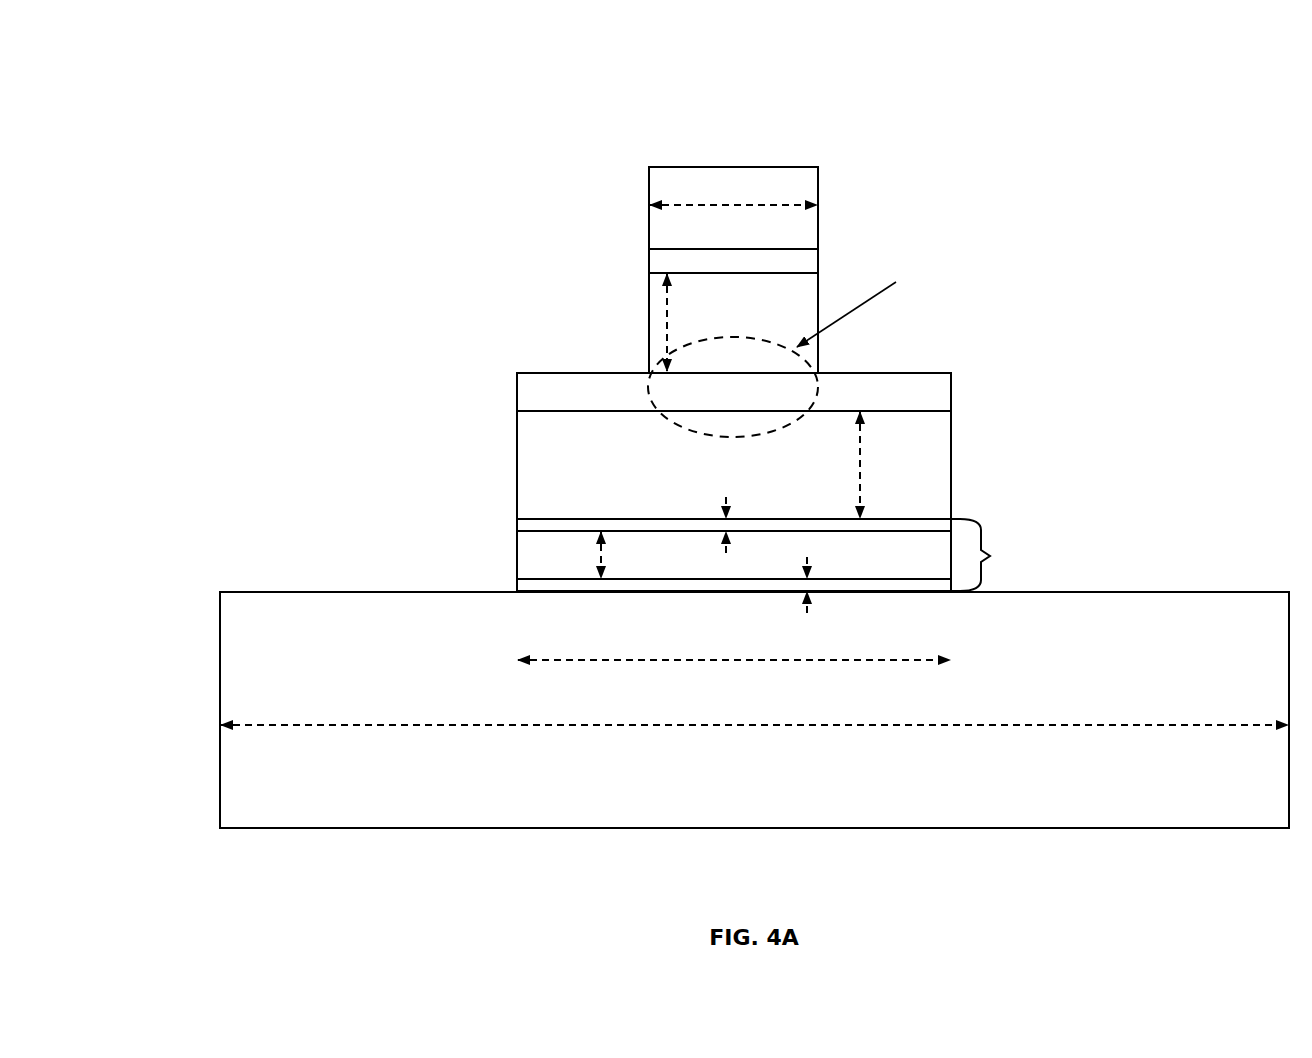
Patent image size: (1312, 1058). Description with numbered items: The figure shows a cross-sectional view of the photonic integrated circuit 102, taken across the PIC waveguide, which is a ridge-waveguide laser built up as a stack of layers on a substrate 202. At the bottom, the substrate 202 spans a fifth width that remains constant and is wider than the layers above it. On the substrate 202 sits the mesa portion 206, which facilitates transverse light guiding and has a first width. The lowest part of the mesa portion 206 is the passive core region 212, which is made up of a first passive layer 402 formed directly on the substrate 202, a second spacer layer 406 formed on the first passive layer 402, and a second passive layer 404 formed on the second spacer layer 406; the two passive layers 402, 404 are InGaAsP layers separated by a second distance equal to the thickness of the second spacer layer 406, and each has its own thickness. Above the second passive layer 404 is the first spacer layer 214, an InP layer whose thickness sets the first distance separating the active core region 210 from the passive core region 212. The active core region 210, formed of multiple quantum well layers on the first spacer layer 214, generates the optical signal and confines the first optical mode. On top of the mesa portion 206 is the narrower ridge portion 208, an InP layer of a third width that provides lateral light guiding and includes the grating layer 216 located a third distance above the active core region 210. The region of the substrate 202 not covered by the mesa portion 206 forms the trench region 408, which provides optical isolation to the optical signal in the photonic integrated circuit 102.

The photonic integrated circuit 102 is at (108, 83).
The substrate 202 is at (754, 710).
The mesa portion 206 is at (513, 372).
The ridge portion 208 is at (647, 172).
The active core region 210 is at (908, 385).
The passive core region 212 is at (992, 556).
The first spacer layer 214 is at (909, 452).
The grating layer 216 is at (688, 262).
The first passive layer 402 is at (907, 585).
The second passive layer 404 is at (905, 522).
The second spacer layer 406 is at (533, 560).
The trench region 408 is at (352, 590).